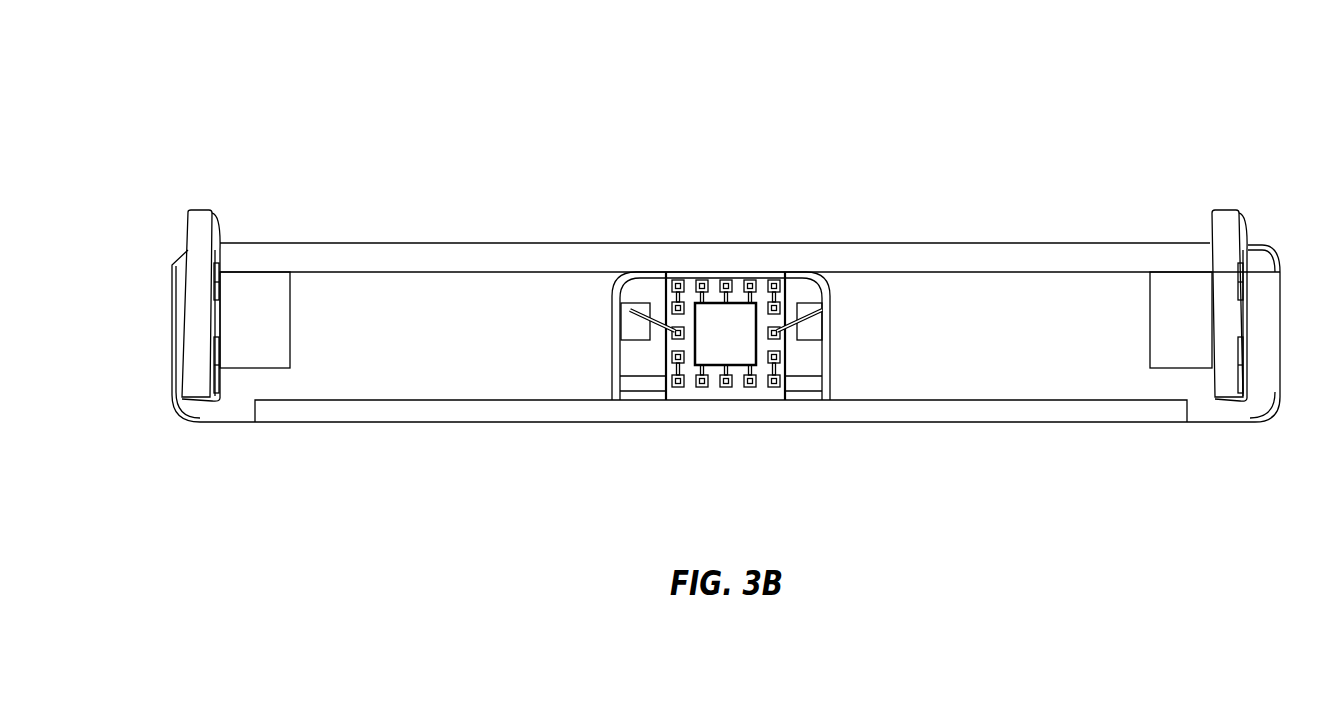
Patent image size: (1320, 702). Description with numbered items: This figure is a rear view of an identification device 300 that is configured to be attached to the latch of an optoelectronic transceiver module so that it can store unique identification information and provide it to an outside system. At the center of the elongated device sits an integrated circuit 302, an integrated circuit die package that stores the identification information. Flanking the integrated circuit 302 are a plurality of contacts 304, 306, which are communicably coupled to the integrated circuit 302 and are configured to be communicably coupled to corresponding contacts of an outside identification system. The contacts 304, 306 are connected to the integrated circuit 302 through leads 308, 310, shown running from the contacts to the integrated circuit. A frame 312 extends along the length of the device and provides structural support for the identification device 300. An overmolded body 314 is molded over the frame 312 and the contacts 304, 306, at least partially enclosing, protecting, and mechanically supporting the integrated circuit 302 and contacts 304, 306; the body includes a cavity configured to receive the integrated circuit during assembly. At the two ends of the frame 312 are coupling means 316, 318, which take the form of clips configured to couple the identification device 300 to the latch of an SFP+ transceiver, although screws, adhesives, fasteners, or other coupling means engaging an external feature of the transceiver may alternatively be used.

The identification device 300 is at (393, 78).
The integrated circuit 302 is at (688, 278).
The contact 304 is at (817, 330).
The contact 306 is at (633, 328).
The lead 308 is at (780, 322).
The lead 310 is at (661, 326).
The frame 312 is at (375, 412).
The overmolded body 314 is at (348, 243).
The coupling means 316 is at (1228, 210).
The coupling means 318 is at (200, 210).